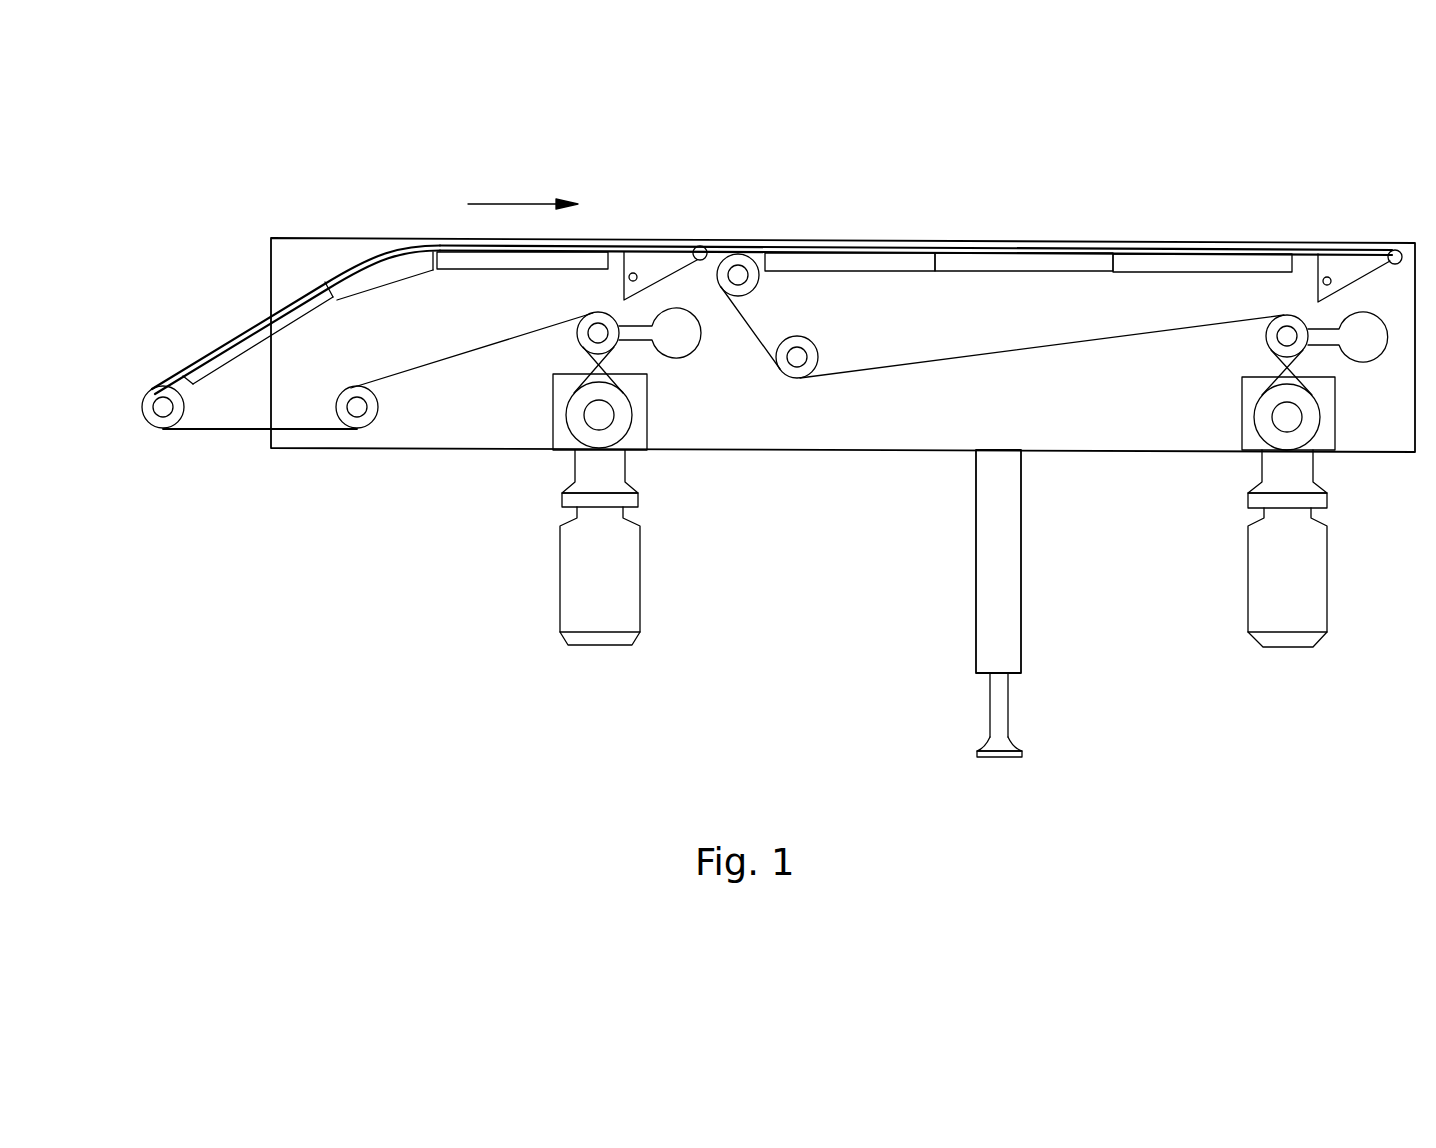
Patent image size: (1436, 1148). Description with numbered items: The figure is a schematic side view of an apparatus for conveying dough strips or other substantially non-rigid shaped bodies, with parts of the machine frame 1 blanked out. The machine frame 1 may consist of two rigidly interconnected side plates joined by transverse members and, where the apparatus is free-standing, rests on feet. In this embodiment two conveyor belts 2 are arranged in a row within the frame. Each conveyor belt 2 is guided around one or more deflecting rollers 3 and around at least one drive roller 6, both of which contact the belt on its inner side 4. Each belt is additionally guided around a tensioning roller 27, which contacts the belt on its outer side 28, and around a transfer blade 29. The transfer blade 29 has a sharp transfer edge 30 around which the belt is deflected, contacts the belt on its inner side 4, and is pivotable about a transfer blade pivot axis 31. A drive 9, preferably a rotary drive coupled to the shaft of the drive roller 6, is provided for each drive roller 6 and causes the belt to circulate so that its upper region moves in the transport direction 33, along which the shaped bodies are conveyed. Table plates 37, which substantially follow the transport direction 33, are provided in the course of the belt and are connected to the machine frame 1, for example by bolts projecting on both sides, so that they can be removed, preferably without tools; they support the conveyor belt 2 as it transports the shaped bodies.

The machine frame 1 is at (1052, 392).
The conveyor belt 2 is at (202, 430).
The deflecting roller 3 is at (163, 407).
The inner side 4 is at (243, 427).
The drive roller 6 is at (929, 412).
The drive 9 is at (592, 608).
The tensioning roller 27 is at (598, 333).
The outer side 28 is at (258, 431).
The transfer blade 29 is at (663, 267).
The transfer edge 30 is at (707, 247).
The transfer blade pivot axis 31 is at (636, 272).
The transport direction 33 is at (493, 207).
The table plate 37 is at (958, 263).